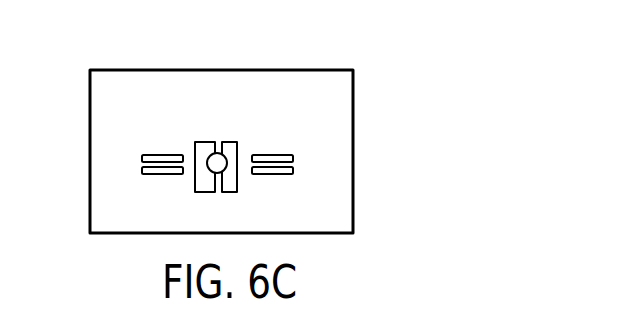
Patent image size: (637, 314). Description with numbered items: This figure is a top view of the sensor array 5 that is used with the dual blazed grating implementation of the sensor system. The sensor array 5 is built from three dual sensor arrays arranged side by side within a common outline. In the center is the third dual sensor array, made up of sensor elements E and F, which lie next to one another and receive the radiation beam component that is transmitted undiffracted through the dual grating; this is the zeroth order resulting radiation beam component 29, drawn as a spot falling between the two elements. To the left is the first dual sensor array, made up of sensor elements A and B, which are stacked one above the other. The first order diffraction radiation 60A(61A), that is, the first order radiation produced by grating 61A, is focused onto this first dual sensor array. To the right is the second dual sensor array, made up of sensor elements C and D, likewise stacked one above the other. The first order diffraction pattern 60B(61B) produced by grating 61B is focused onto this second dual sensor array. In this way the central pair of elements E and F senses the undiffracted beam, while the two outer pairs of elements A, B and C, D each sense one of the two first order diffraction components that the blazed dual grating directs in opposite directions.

The sensor array 5 is at (128, 250).
The first order diffraction radiation 60A is at (211, 98).
The grating 61A is at (161, 155).
The first order diffraction pattern 60B is at (353, 98).
The grating 61B is at (276, 155).
The sensor element A is at (152, 155).
The sensor element B is at (155, 175).
The sensor element C is at (285, 155).
The sensor element D is at (284, 176).
The sensor element E is at (205, 142).
The sensor element F is at (229, 142).
The zeroth order resulting radiation beam component 29 is at (215, 165).